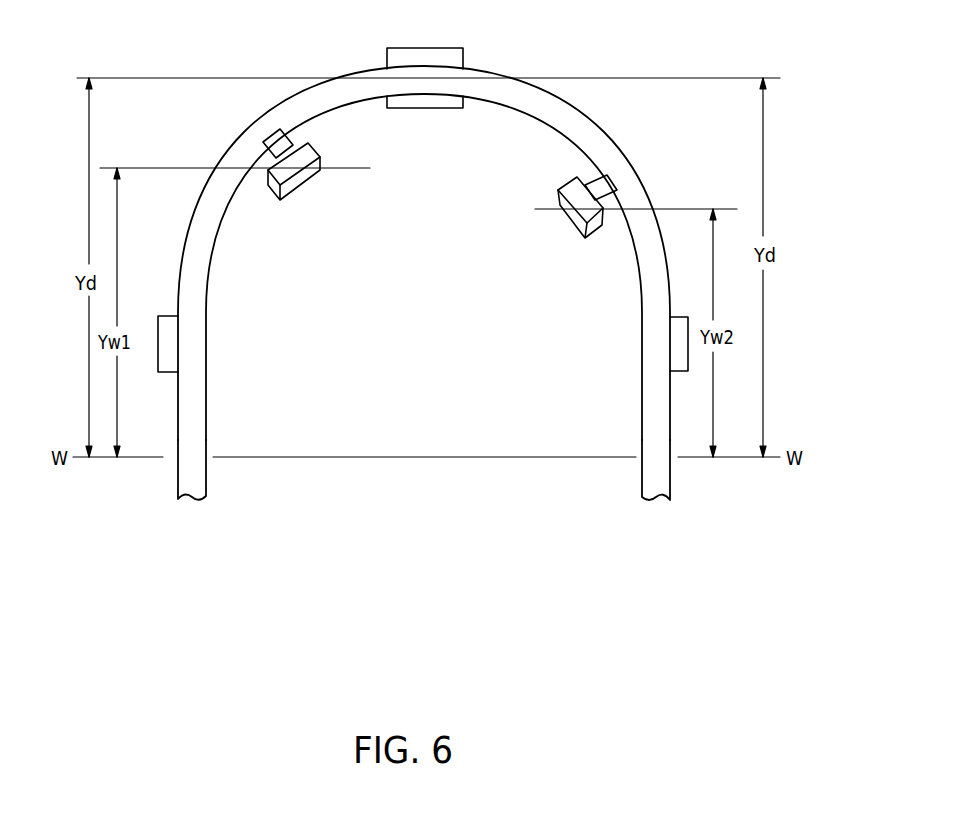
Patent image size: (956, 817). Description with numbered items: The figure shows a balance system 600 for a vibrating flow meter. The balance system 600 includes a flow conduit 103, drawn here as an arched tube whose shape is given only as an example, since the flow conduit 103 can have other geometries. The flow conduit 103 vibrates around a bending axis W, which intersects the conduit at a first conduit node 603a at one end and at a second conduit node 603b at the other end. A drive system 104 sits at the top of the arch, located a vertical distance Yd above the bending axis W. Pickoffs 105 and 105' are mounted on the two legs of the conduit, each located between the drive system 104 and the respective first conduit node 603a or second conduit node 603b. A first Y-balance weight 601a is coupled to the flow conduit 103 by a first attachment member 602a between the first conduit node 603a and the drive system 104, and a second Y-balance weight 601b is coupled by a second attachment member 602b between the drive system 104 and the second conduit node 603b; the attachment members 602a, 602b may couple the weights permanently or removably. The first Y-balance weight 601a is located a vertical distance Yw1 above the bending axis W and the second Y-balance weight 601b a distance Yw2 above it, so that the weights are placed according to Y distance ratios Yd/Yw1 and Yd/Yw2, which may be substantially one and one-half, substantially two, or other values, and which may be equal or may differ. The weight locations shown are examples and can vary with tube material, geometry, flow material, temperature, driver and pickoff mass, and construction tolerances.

The balance system 600 is at (235, 587).
The flow conduit 103 is at (204, 436).
The drive system 104 is at (428, 108).
The pickoff 105 is at (211, 344).
The pickoff 105' is at (635, 365).
The first Y-balance weight 601a is at (296, 196).
The second Y-balance weight 601b is at (565, 229).
The first attachment member 602a is at (270, 172).
The second attachment member 602b is at (614, 210).
The first conduit node 603a is at (162, 505).
The second conduit node 603b is at (675, 507).